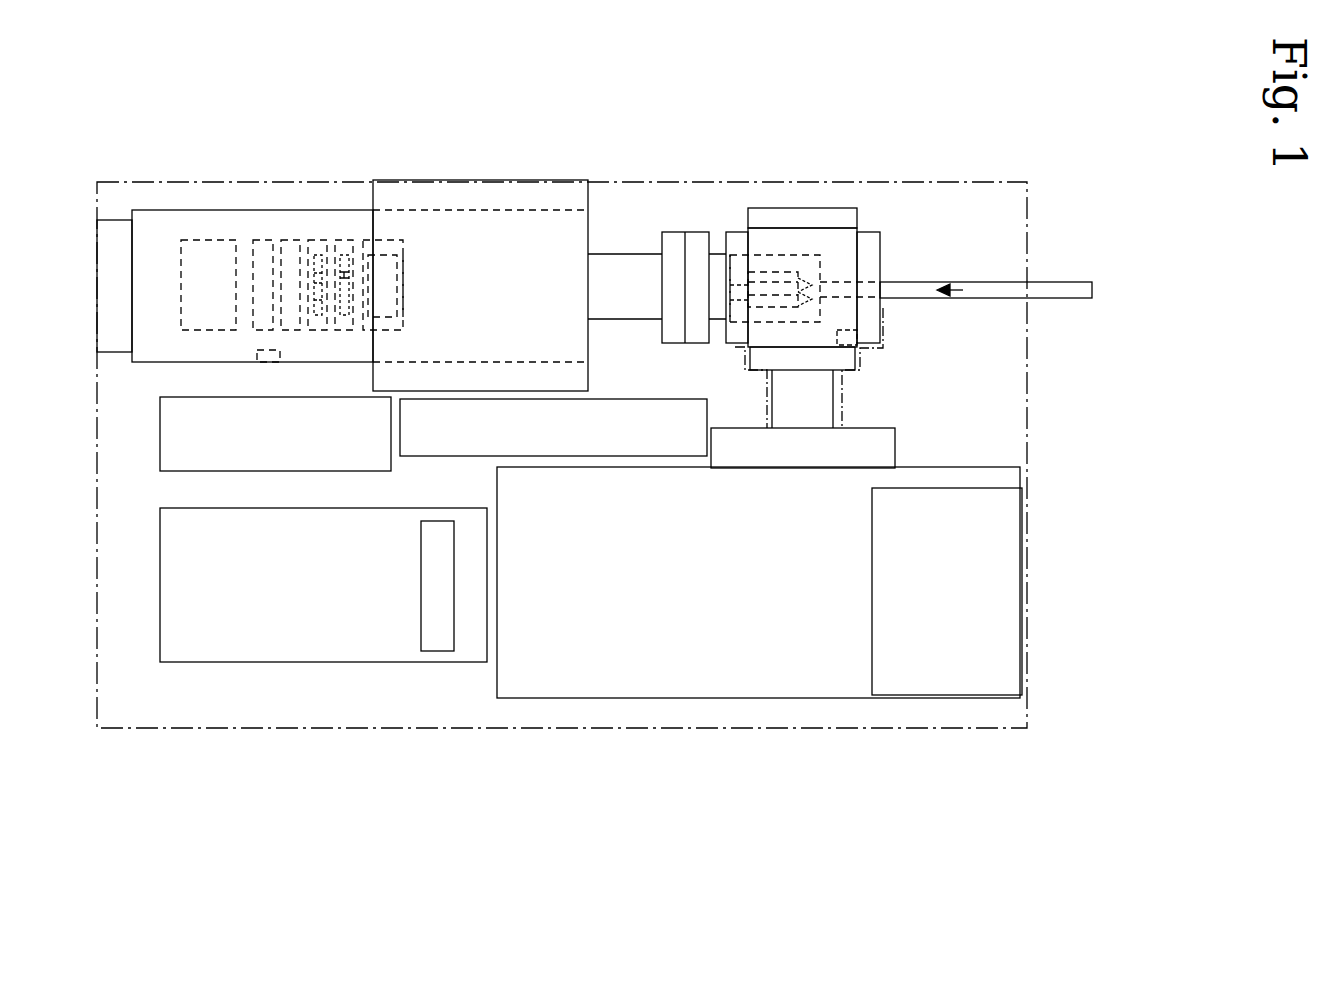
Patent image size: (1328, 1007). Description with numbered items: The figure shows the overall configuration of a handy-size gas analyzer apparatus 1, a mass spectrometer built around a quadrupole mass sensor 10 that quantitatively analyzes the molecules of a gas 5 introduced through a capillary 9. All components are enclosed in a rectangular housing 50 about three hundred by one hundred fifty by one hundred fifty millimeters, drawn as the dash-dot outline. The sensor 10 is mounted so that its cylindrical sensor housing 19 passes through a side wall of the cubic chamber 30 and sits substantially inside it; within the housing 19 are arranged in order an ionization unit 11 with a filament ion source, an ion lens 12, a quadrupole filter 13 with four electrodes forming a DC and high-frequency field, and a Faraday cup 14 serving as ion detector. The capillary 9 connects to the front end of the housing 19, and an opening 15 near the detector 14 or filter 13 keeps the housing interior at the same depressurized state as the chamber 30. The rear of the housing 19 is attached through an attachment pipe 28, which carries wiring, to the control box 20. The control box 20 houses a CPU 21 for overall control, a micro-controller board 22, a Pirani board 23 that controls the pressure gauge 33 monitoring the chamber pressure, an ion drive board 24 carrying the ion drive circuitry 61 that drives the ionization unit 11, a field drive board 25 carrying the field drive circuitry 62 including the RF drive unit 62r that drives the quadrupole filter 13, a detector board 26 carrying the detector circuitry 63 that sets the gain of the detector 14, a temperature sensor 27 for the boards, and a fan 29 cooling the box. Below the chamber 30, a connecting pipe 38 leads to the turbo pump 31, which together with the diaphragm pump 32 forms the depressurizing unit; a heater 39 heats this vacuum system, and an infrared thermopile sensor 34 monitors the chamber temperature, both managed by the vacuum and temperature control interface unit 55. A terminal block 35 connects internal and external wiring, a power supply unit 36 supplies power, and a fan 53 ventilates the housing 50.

The analyzer apparatus 1 is at (942, 168).
The gas 5 is at (950, 282).
The capillary 9 is at (990, 282).
The quadrupole mass sensor 10 is at (785, 262).
The ionization unit 11 is at (813, 263).
The ion lens 12 is at (800, 263).
The quadrupole filter 13 is at (763, 265).
The Faraday cup 14 is at (750, 270).
The opening 15 is at (743, 287).
The sensor housing 19 is at (773, 257).
The control box 20 is at (337, 222).
The CPU 21 is at (213, 243).
The micro-controller board 22 is at (262, 242).
The Pirani board 23 is at (290, 242).
The ion drive board 24 is at (312, 217).
The field drive board 25 is at (367, 195).
The detector board 26 is at (423, 215).
The temperature sensor 27 is at (268, 362).
The attachment pipe 28 is at (618, 268).
The fan 29 is at (113, 238).
The chamber 30 is at (786, 292).
The turbo pump 31 is at (697, 688).
The diaphragm pump 32 is at (371, 652).
The pressure gauge 33 is at (558, 203).
The infrared thermopile sensor 34 is at (858, 340).
The terminal block 35 is at (609, 402).
The power supply unit 36 is at (275, 412).
The connecting pipe 38 is at (828, 392).
The heater 39 is at (847, 417).
The housing 50 is at (303, 733).
The fan 53 is at (435, 641).
The vacuum and temperature control interface unit 55 is at (930, 488).
The ion drive circuitry 61 is at (320, 263).
The field drive circuitry 62 is at (365, 238).
The RF drive unit 62r is at (343, 258).
The detector circuitry 63 is at (402, 267).